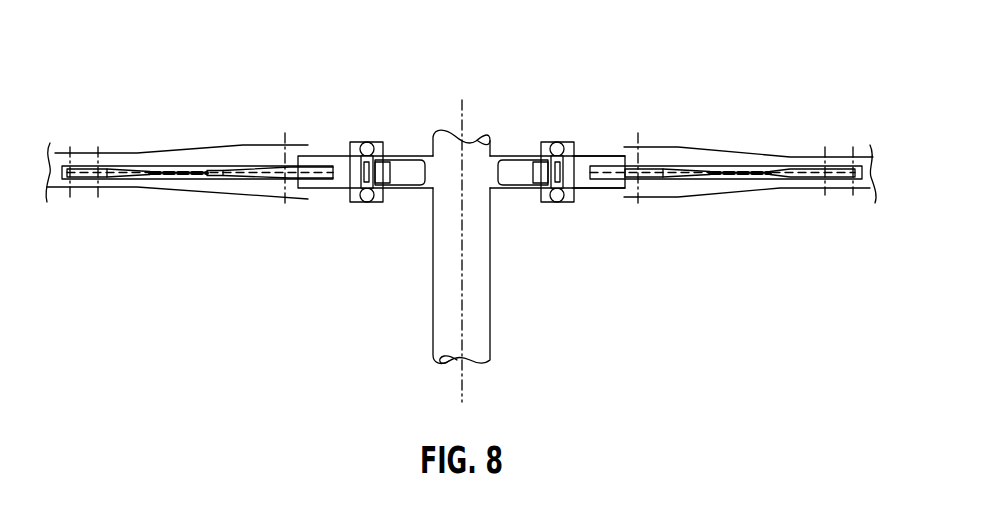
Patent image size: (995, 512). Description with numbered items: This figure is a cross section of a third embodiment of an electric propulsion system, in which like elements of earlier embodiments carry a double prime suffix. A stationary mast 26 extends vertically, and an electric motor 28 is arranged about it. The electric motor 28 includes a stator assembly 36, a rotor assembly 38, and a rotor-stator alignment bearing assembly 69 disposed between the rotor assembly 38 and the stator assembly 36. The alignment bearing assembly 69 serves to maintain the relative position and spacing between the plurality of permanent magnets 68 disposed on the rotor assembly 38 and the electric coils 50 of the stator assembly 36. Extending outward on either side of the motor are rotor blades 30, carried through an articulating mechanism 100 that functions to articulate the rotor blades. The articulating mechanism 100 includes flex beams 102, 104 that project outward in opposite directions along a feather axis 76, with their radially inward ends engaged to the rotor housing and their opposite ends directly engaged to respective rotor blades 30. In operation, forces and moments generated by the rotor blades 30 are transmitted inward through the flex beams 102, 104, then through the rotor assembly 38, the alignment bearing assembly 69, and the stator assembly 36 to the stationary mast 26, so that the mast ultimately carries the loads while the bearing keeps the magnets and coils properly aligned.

The stationary mast 26 is at (478, 338).
The electric motor 28 is at (600, 113).
The rotor blades 30 is at (868, 153).
The stator assembly 36 is at (523, 145).
The rotor assembly 38 is at (586, 148).
The electric coils 50 is at (383, 174).
The permanent magnets 68 is at (361, 170).
The rotor-stator alignment bearing assembly 69 is at (557, 142).
The feather axis 76 is at (57, 158).
The articulating mechanism 100 is at (690, 137).
The flex beam 102 is at (707, 182).
The flex beam 104 is at (212, 190).